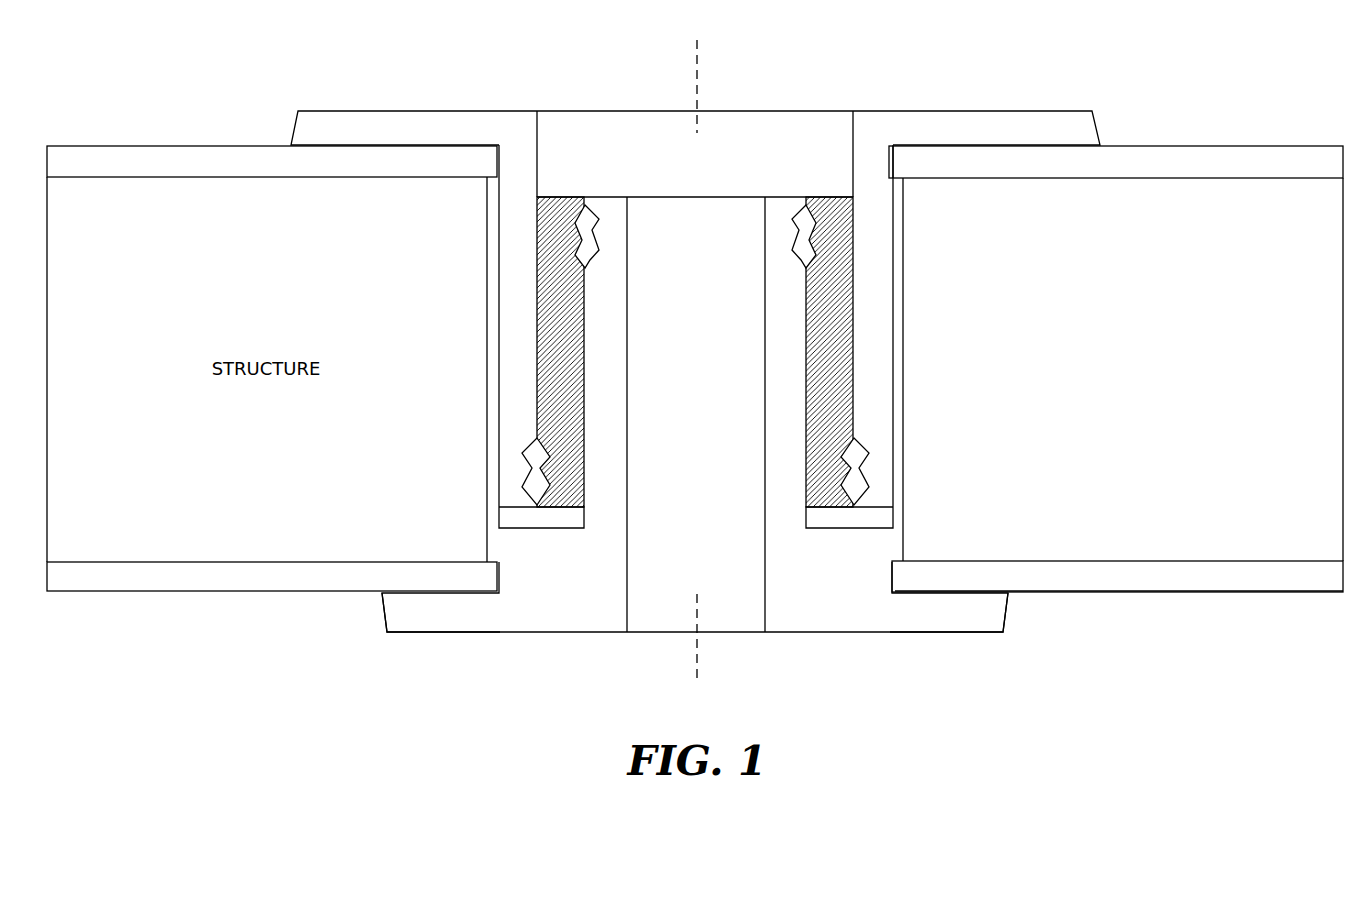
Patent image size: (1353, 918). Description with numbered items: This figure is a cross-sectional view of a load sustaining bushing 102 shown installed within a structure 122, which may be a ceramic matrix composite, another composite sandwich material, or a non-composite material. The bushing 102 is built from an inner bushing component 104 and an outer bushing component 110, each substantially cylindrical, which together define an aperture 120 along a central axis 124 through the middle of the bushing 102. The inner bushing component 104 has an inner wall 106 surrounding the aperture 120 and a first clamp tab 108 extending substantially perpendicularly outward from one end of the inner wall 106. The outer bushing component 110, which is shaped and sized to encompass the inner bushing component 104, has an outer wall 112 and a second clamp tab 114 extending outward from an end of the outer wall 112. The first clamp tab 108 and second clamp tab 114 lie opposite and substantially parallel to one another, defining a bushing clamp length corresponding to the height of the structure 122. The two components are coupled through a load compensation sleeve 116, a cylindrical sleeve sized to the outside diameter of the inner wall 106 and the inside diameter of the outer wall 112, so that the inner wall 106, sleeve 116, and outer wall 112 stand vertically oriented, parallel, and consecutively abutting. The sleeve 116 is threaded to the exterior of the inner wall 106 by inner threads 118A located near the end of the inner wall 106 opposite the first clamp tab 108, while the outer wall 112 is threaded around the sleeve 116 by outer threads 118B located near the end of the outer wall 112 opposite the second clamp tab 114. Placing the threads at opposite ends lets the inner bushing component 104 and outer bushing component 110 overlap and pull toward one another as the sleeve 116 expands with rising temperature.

The load sustaining bushing 102 is at (556, 58).
The inner bushing component 104 is at (773, 622).
The inner wall 106 is at (783, 373).
The first clamp tab 108 is at (417, 622).
The outer bushing component 110 is at (860, 118).
The outer wall 112 is at (863, 190).
The second clamp tab 114 is at (325, 122).
The load compensation sleeve 116 is at (837, 310).
The inner threads 118A is at (800, 237).
The outer threads 118B is at (852, 470).
The aperture 120 is at (718, 571).
The structure 122 is at (1217, 167).
The central axis 124 is at (697, 362).